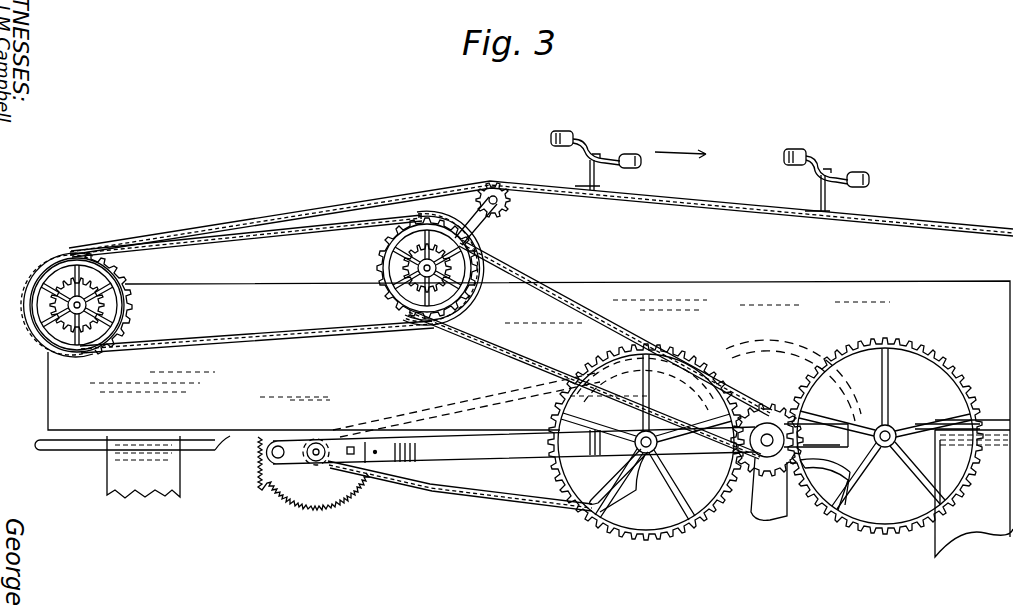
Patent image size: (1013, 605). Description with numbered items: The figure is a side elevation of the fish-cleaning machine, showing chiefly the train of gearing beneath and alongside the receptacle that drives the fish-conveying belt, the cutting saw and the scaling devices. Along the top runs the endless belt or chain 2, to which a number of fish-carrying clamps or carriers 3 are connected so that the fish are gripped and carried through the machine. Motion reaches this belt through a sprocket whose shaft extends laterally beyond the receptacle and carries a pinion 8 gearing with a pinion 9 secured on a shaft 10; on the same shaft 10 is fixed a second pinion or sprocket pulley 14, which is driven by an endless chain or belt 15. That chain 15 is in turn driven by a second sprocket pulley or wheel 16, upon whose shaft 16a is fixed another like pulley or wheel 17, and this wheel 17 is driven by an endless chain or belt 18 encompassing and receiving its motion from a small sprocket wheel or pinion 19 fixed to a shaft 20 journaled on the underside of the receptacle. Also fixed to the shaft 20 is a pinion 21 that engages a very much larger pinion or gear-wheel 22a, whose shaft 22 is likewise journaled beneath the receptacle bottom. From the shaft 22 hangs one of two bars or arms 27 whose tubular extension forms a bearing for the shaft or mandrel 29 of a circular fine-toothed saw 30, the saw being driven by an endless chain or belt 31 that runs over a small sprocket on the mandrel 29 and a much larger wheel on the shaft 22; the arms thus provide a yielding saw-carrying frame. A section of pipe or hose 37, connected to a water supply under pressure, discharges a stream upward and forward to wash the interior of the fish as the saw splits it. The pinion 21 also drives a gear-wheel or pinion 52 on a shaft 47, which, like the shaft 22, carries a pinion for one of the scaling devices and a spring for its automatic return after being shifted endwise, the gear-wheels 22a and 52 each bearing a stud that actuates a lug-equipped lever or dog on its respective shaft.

The endless belt or chain 2 is at (541, 215).
The fish-carrying clamp or carrier 3 is at (710, 171).
The pinion 8 is at (72, 278).
The pinion 9 is at (24, 302).
The shaft 10 is at (52, 327).
The second pinion or sprocket pulley 14 is at (127, 308).
The endless chain or belt 15 is at (263, 228).
The second sprocket pulley or wheel 16 is at (397, 289).
The shaft 16a is at (408, 268).
The pulley or wheel 17 is at (442, 238).
The endless chain or belt 18 is at (485, 343).
The small sprocket wheel or pinion 19 is at (761, 365).
The shaft 20 is at (770, 428).
The pinion 21 is at (750, 415).
The shaft 22 is at (601, 527).
The pinion or gear-wheel 22a is at (653, 528).
The bar or arm 27 is at (480, 448).
The shaft or mandrel 29 is at (313, 459).
The circular fine-toothed saw 30 is at (331, 500).
The endless chain or belt 31 is at (507, 506).
The section of pipe or hose 37 is at (190, 446).
The shaft 47 is at (842, 484).
The gear-wheel or pinion 52 is at (885, 451).